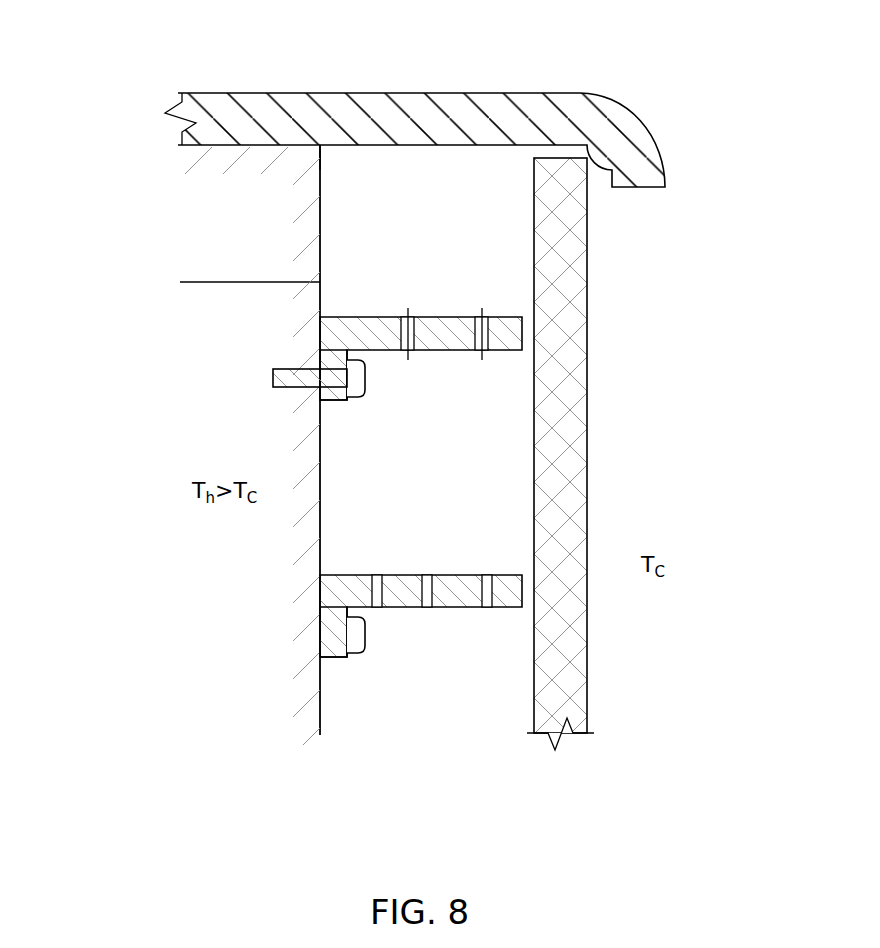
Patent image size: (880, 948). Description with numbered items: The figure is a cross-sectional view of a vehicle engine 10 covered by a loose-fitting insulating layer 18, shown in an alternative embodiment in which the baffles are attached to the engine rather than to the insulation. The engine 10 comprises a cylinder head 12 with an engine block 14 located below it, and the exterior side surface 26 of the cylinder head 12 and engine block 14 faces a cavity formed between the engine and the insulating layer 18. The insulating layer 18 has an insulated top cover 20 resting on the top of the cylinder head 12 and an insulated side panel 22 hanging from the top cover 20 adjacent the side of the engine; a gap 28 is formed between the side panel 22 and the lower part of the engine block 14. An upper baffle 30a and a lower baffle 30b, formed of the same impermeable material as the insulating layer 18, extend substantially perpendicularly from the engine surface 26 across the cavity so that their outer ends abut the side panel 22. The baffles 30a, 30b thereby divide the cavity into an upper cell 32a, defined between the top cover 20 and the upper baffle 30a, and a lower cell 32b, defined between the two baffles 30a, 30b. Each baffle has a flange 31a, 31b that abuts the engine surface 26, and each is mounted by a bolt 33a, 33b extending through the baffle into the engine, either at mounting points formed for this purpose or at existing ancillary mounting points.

The engine 10 is at (117, 382).
The cylinder head 12 is at (254, 236).
The engine block 14 is at (254, 597).
The insulating layer 18 is at (655, 100).
The top cover 20 is at (571, 93).
The side panel 22 is at (587, 677).
The exterior side surface 26 is at (320, 168).
The gap 28 is at (435, 750).
The upper baffle 30a is at (500, 350).
The lower baffle 30b is at (505, 607).
The flange 31a is at (335, 400).
The flange 31b is at (330, 657).
The upper cell 32a is at (490, 257).
The lower cell 32b is at (488, 428).
The bolt 33a is at (293, 388).
The bolt 33b is at (365, 637).